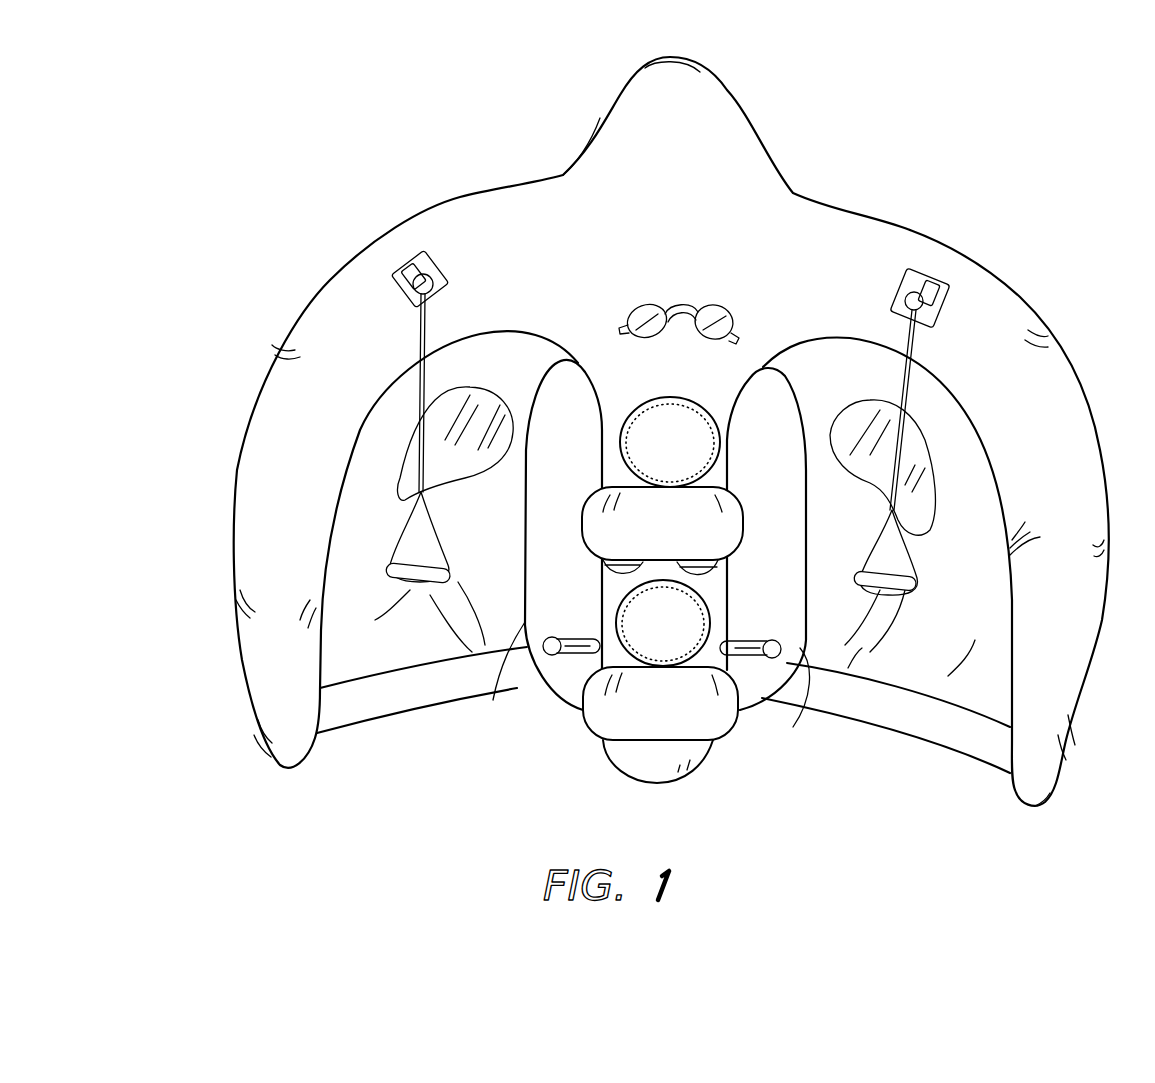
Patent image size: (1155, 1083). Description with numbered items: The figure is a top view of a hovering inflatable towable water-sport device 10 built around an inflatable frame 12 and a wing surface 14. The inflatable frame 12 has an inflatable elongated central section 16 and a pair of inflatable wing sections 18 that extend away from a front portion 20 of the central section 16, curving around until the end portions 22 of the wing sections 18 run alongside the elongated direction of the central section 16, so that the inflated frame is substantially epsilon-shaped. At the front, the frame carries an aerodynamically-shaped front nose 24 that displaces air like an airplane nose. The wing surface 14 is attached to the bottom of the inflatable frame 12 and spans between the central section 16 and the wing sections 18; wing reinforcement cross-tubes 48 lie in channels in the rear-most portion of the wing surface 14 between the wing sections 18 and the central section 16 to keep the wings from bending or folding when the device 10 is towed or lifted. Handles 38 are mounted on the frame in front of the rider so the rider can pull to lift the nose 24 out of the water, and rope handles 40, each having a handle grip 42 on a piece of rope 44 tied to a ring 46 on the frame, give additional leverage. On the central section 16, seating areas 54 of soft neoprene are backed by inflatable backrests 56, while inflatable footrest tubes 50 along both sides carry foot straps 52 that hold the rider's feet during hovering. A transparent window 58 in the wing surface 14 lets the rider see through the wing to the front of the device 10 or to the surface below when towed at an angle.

The hovering inflatable towable water-sport device 10 is at (486, 153).
The inflatable frame 12 is at (790, 197).
The wing surface 14 is at (425, 650).
The inflatable elongated central section 16 is at (688, 770).
The inflatable wing sections 18 is at (248, 470).
The front portion 20 is at (578, 152).
The end portions 22 is at (1060, 787).
The front nose 24 is at (705, 82).
The handles 38 is at (730, 315).
The rope handles 40 is at (398, 545).
The handle grip 42 is at (412, 582).
The rope 44 is at (437, 380).
The ring 46 is at (417, 300).
The wing reinforcement cross-tubes 48 is at (382, 700).
The inflatable footrest tubes 50 is at (503, 660).
The foot straps 52 is at (575, 639).
The seating areas 54 is at (630, 440).
The inflatable backrests 56 is at (602, 530).
The transparent window 58 is at (460, 490).